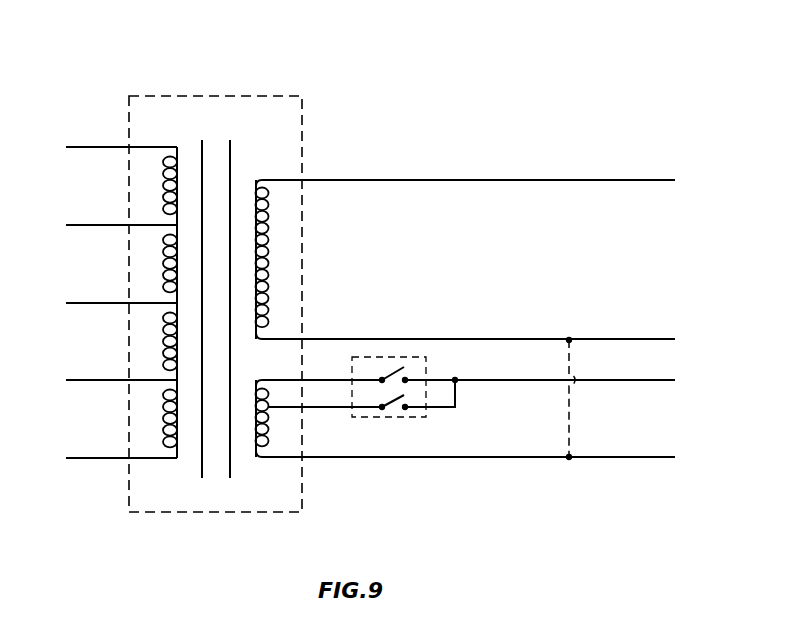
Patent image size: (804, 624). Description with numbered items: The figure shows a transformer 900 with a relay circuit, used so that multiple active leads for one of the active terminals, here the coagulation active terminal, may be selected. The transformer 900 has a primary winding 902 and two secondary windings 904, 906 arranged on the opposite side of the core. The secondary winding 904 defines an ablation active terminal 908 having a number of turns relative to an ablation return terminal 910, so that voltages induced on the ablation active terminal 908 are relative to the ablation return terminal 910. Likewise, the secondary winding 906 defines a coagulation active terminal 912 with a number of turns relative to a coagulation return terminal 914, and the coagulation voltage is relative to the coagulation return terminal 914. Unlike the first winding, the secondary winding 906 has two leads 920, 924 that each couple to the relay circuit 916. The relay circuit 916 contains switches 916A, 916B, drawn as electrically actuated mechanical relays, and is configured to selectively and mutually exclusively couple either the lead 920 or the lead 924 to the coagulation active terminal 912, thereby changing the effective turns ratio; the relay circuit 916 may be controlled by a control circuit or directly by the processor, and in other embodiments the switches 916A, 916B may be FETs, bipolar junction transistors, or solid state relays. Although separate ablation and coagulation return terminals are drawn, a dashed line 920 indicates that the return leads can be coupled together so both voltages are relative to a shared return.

The transformer 900 is at (143, 526).
The primary winding 902 is at (120, 71).
The secondary winding 904 is at (354, 244).
The secondary winding 906 is at (404, 441).
The ablation active terminal 908 is at (645, 179).
The ablation return terminal 910 is at (643, 339).
The coagulation active terminal 912 is at (665, 379).
The coagulation return terminal 914 is at (652, 457).
The relay circuit 916 is at (420, 391).
The switch 916A is at (390, 370).
The switch 916B is at (395, 398).
The lead 920 is at (570, 415).
The lead 924 is at (317, 408).